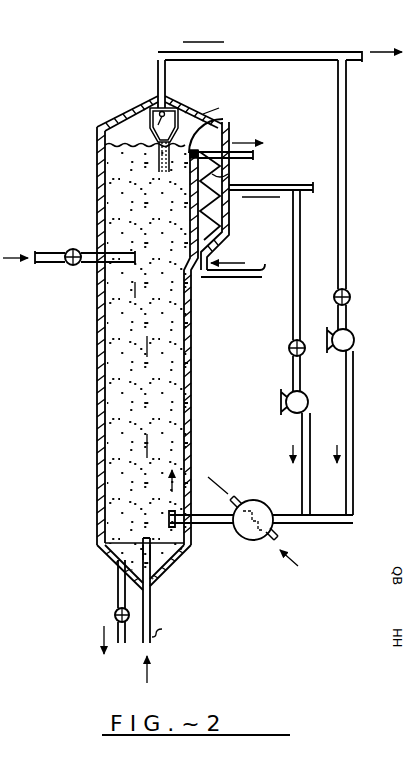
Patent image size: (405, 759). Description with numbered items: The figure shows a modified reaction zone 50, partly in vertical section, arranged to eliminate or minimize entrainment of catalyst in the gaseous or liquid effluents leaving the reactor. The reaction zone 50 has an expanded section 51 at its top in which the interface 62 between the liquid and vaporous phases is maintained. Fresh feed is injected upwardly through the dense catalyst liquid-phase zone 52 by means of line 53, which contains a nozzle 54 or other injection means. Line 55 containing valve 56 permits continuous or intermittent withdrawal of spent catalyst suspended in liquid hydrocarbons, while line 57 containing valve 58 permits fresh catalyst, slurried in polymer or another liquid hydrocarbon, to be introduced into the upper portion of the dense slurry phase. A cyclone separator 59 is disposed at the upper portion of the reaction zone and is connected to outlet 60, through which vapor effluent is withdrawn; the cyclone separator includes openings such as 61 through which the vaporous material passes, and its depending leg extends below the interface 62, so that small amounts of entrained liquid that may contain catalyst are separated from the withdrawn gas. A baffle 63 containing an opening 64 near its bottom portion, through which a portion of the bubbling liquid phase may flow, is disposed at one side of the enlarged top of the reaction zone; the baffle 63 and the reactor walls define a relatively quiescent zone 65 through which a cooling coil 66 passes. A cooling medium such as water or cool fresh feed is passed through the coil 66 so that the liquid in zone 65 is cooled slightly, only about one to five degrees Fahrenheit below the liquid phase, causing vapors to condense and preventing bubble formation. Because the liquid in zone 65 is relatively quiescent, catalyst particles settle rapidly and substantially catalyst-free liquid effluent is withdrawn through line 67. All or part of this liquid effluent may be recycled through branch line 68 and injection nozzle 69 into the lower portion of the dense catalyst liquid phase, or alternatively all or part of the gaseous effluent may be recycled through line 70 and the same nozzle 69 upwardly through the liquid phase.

The reaction zone 50 is at (97, 370).
The expanded section 51 is at (208, 108).
The dense catalyst liquid-phase zone 52 is at (106, 437).
The feed line 53 is at (152, 597).
The nozzle 54 is at (144, 543).
The withdrawal line 55 is at (118, 586).
The valve 56 is at (114, 616).
The fresh catalyst line 57 is at (46, 253).
The valve 58 is at (76, 266).
The cyclone separator 59 is at (138, 119).
The outlet 60 is at (297, 52).
The openings 61 is at (150, 124).
The interface 62 is at (105, 155).
The baffle 63 is at (190, 205).
The opening 64 is at (192, 244).
The quiescent zone 65 is at (217, 237).
The cooling coil 66 is at (228, 130).
The liquid effluent line 67 is at (317, 187).
The branch line 68 is at (303, 474).
The injection nozzle 69 is at (166, 511).
The gaseous effluent recycle line 70 is at (346, 252).